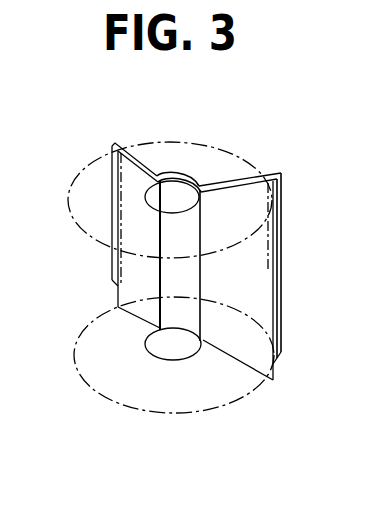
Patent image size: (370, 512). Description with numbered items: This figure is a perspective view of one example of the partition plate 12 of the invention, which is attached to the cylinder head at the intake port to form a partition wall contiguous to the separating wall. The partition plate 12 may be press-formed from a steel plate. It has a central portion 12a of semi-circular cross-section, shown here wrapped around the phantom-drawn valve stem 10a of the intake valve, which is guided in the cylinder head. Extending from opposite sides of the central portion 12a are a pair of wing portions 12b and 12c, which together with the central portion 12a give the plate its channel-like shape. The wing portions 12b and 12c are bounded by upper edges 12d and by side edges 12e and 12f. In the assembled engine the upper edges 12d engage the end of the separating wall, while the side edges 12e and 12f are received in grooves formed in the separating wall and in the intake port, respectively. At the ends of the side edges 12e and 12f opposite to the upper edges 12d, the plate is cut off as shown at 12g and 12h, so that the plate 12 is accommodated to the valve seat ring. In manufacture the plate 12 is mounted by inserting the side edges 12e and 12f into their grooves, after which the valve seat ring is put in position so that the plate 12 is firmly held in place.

The valve stem 10a is at (145, 193).
The partition plate 12 is at (191, 239).
The central portion 12a is at (182, 172).
The wing portion 12b is at (250, 262).
The wing portion 12c is at (122, 214).
The upper edges 12d is at (228, 183).
The side edge 12e is at (283, 298).
The side edge 12f is at (111, 157).
The cut-off 12g is at (279, 361).
The cut-off 12h is at (112, 283).